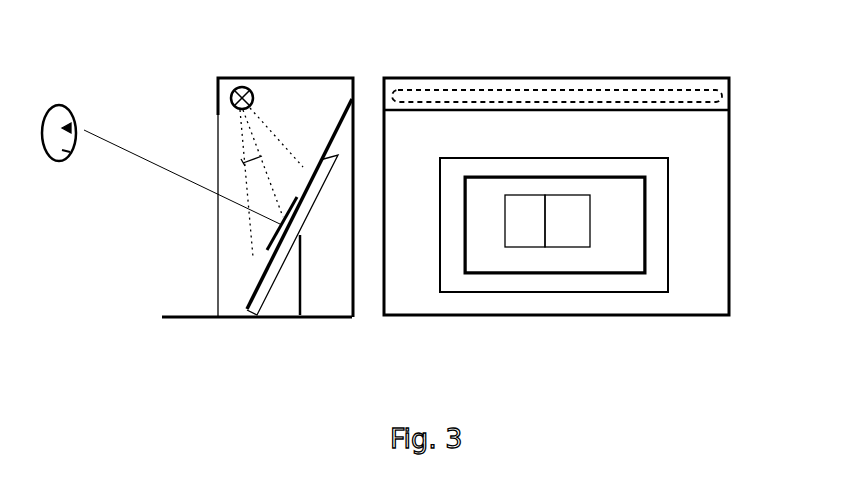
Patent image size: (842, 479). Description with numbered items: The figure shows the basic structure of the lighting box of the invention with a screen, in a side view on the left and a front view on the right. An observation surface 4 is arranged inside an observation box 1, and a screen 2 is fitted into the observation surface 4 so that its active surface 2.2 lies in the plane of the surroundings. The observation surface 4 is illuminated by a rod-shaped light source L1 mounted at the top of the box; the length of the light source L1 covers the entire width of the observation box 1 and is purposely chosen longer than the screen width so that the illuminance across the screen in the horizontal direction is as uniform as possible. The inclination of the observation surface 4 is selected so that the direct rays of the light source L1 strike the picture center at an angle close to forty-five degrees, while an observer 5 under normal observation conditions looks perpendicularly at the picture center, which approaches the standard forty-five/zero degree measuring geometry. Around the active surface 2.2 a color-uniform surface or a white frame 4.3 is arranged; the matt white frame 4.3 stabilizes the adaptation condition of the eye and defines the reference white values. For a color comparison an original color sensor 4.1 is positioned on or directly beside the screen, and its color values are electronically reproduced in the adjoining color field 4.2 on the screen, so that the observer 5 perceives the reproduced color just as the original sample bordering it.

The observation box 1 is at (323, 318).
The screen 2 is at (310, 197).
The active surface of the screen 2.2 is at (632, 211).
The observation surface 4 is at (427, 167).
The original color sensor 4.1 is at (270, 240).
The color reproduction 4.2 is at (585, 230).
The white frame 4.3 is at (660, 268).
The observer 5 is at (67, 105).
The rod-shaped light source L1 is at (252, 86).